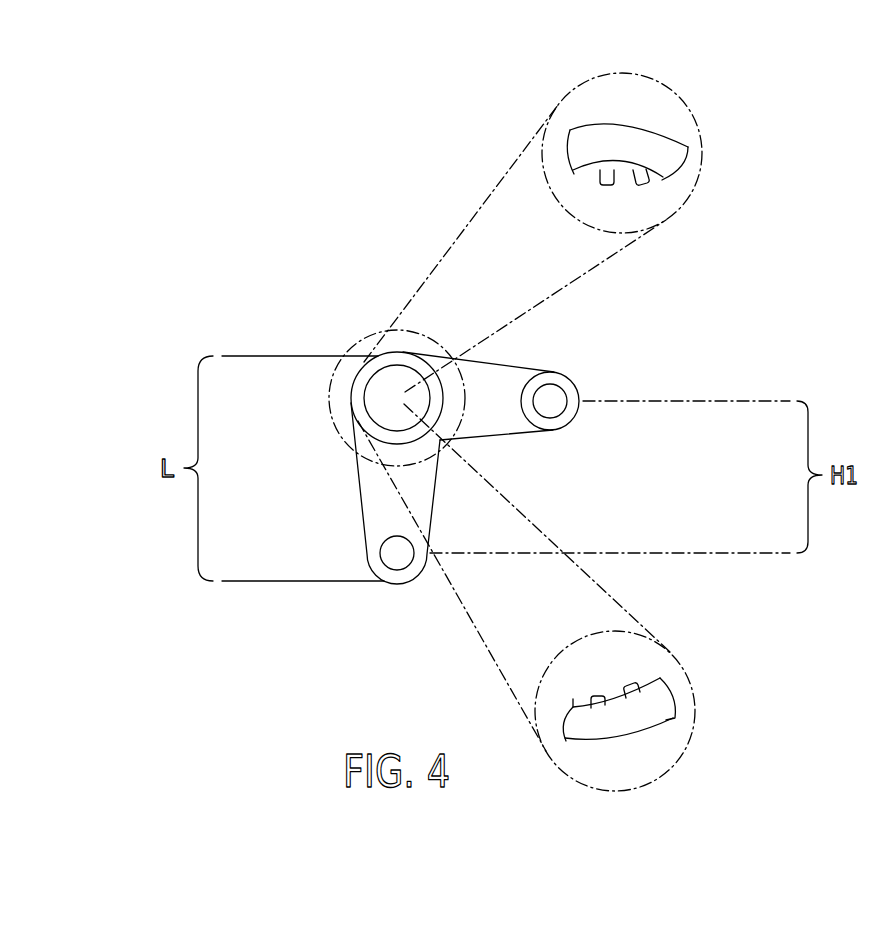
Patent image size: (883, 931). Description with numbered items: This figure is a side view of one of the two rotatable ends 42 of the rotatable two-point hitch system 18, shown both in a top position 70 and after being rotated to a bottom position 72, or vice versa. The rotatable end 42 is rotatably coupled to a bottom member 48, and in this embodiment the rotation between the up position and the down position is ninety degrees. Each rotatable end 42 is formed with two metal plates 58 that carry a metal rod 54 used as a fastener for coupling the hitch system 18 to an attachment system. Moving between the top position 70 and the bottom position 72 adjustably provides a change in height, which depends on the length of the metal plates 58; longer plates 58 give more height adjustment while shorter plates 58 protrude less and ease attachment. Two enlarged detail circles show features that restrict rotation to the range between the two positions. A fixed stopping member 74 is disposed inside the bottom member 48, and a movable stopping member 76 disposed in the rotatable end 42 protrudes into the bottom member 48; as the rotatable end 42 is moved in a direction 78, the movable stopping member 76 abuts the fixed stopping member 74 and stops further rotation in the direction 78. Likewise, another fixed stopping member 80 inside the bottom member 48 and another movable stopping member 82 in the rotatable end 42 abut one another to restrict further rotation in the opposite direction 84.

The hitch system 18 is at (340, 282).
The rotatable end 42 is at (352, 405).
The bottom member 48 is at (369, 392).
The metal rod 54 is at (548, 401).
The metal plates 58 is at (493, 417).
The top position 70 is at (554, 361).
The bottom position 72 is at (360, 553).
The fixed stopping member 74 is at (605, 183).
The movable stopping member 76 is at (642, 183).
The direction 78 is at (636, 116).
The fixed stopping member 80 is at (597, 697).
The movable stopping member 82 is at (633, 690).
The direction 84 is at (620, 756).